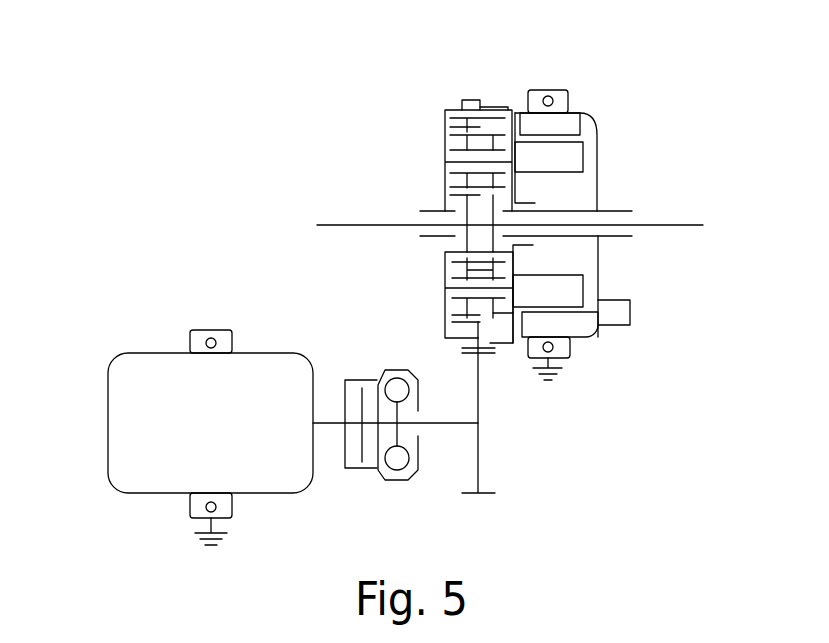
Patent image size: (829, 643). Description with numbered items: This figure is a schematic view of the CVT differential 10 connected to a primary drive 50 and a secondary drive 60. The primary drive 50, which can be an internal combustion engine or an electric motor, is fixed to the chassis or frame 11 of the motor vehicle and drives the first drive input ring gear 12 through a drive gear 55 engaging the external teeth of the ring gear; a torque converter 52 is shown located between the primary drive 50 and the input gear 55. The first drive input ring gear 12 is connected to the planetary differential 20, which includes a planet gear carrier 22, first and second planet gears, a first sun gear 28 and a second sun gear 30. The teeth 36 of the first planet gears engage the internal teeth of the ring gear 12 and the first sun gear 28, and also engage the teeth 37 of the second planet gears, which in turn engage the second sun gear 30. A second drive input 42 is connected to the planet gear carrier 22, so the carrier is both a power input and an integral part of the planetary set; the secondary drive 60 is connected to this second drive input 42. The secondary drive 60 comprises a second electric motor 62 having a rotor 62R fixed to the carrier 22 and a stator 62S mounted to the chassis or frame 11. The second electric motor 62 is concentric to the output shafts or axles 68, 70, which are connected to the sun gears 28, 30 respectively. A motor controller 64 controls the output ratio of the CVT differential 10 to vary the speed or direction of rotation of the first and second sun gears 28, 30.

The CVT differential 10 is at (678, 99).
The chassis or frame 11 is at (212, 546).
The first drive input ring gear 12 is at (468, 100).
The planetary differential 20 is at (466, 216).
The planet gear carrier 22 is at (497, 106).
The first sun gear 28 is at (450, 244).
The second sun gear 30 is at (492, 215).
The teeth of the first planet gears 36 is at (492, 142).
The teeth of the second planet gears 37 is at (472, 145).
The second drive input 42 is at (510, 352).
The primary drive 50 is at (119, 441).
The torque converter 52 is at (382, 476).
The drive gear 55 is at (480, 458).
The secondary drive 60 is at (618, 297).
The second electric motor 62 is at (610, 131).
The rotor 62R is at (597, 150).
The stator 62S is at (584, 118).
The motor controller 64 is at (624, 313).
The output shaft or axle 68 is at (337, 226).
The output shaft or axle 70 is at (700, 222).